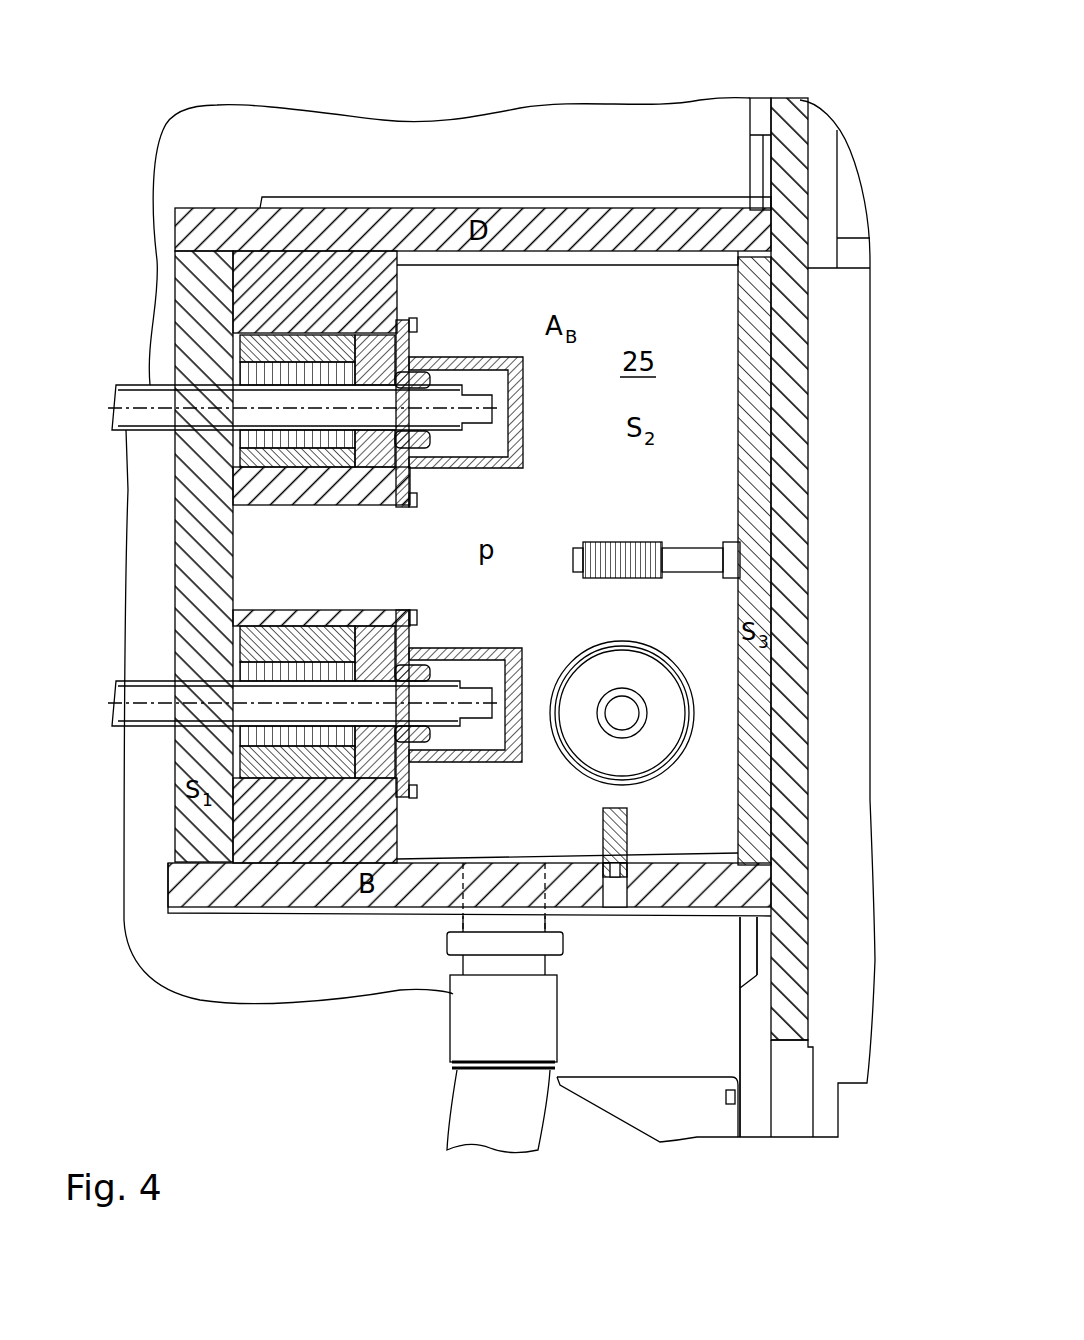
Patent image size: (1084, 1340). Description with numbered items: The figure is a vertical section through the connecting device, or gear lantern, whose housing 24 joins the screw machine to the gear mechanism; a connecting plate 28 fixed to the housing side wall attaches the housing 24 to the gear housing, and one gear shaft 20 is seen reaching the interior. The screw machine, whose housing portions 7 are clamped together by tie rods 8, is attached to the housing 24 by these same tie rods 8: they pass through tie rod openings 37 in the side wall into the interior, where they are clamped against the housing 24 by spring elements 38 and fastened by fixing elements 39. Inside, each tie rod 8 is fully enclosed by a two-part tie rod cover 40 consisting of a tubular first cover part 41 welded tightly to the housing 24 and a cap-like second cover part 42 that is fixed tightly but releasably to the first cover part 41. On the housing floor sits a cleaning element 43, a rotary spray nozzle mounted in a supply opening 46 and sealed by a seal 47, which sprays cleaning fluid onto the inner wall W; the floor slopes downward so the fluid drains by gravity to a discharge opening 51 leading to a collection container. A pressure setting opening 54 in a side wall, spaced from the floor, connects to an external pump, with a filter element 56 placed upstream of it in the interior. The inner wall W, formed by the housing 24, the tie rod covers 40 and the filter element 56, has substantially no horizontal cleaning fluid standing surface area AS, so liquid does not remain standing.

The housing portions 7 is at (145, 585).
The tie rods 8 is at (128, 401).
The gear shaft 20 is at (707, 560).
The housing 24 is at (221, 196).
The connecting plate 28 is at (790, 113).
The tie rod openings 37 is at (170, 431).
The spring elements 38 is at (225, 365).
The fixing elements 39 is at (405, 335).
The tie rod covers 40 is at (438, 343).
The first cover part 41 is at (317, 270).
The second cover part 42 is at (495, 357).
The cleaning element 43 is at (627, 827).
The supply opening 46 is at (630, 907).
The seal 47 is at (615, 890).
The discharge opening 51 is at (547, 905).
The pressure setting opening 54 is at (688, 680).
The filter element 56 is at (677, 707).
The inner wall W is at (740, 300).
The cleaning fluid standing surface area AS is at (370, 610).